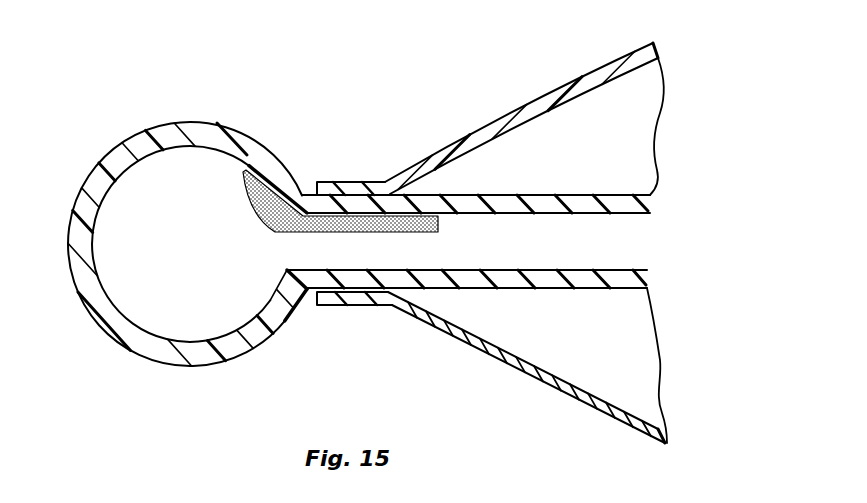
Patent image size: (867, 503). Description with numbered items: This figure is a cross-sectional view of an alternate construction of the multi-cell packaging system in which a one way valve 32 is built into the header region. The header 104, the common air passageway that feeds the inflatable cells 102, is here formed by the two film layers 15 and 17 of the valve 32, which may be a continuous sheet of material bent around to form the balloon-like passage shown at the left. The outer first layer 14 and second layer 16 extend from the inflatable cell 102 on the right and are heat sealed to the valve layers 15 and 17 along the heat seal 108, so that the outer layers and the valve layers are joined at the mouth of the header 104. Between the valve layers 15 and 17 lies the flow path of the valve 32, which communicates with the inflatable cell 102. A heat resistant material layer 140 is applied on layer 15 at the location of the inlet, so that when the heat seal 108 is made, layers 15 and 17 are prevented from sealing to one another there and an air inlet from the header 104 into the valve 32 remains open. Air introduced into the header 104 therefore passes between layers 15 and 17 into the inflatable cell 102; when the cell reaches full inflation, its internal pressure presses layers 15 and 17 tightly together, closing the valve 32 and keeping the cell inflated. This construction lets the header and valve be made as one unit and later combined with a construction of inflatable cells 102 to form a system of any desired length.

The header 104 is at (167, 178).
The heat resistant material layer 140 is at (280, 233).
The film layer 15 is at (560, 193).
The heat seal 108 is at (339, 192).
The first layer 14 is at (460, 142).
The film layer 17 is at (523, 289).
The second layer 16 is at (543, 383).
The inflatable cell 102 is at (653, 90).
The one way valve 32 is at (506, 255).